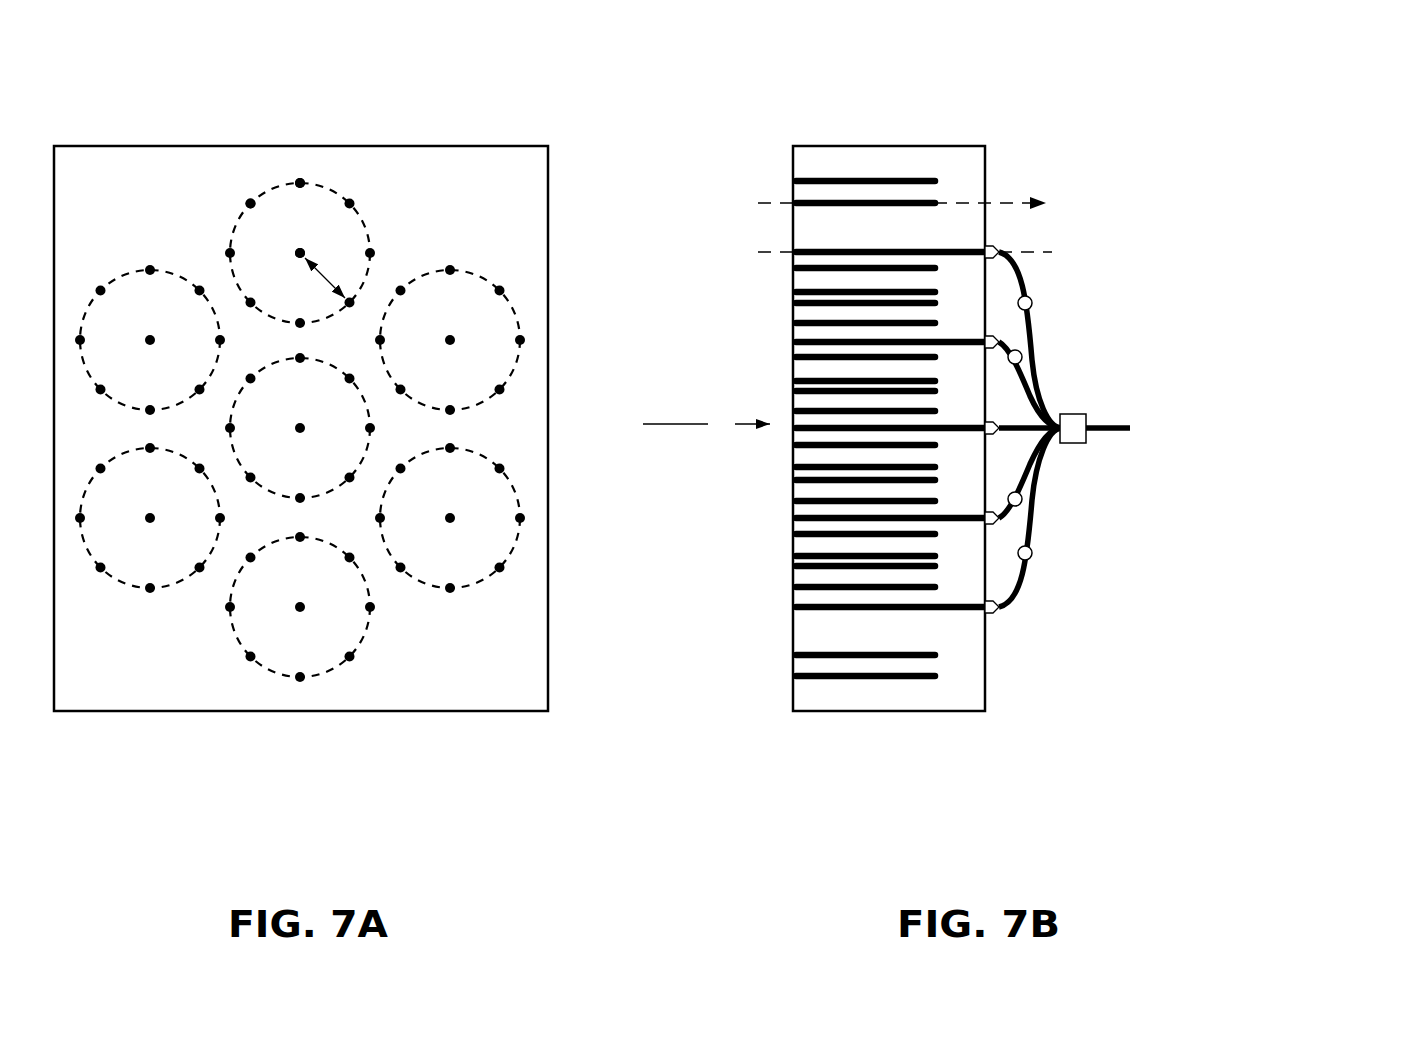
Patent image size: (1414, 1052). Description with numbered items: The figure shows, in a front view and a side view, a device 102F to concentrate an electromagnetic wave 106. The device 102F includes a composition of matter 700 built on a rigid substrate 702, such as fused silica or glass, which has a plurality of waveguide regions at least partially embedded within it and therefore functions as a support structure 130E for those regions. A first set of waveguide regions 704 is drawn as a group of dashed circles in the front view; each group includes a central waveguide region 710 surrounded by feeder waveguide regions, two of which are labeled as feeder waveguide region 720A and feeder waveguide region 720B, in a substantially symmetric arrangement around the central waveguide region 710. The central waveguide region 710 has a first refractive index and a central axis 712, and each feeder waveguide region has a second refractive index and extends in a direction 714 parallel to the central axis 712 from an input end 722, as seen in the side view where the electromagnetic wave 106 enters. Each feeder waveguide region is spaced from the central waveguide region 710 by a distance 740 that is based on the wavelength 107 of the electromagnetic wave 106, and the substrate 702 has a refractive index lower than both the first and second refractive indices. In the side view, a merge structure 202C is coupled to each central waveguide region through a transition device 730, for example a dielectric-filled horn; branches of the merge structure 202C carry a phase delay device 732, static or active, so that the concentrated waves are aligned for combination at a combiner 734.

In FIG. 7A, the composition of matter 700 is at (386, 413).
In FIG. 7B, the composition of matter 700 is at (987, 423).
In FIG. 7A, the device 102F is at (386, 413).
In FIG. 7A, the substrate 702 is at (148, 676).
In FIG. 7B, the substrate 702 is at (985, 676).
In FIG. 7A, the support structure 130E is at (350, 711).
In FIG. 7B, the support structure 130E is at (943, 711).
In FIG. 7A, the waveguide regions 704 is at (390, 203).
In FIG. 7A, the central waveguide region 710 is at (300, 253).
In FIG. 7B, the central waveguide region 710 is at (990, 247).
In FIG. 7A, the feeder waveguide region 720A is at (300, 183).
In FIG. 7B, the feeder waveguide region 720A is at (832, 181).
In FIG. 7A, the feeder waveguide region 720B is at (250, 204).
In FIG. 7B, the feeder waveguide region 720B is at (930, 203).
In FIG. 7A, the distance 740 is at (332, 280).
In FIG. 7B, the direction 714 is at (993, 205).
In FIG. 7B, the input end 722 is at (786, 211).
In FIG. 7B, the central axis 712 is at (1046, 256).
In FIG. 7B, the transition device 730 is at (1000, 250).
In FIG. 7B, the phase delay device 732 is at (1032, 308).
In FIG. 7B, the combiner 734 is at (1076, 414).
In FIG. 7B, the merge structure 202C is at (1045, 538).
In FIG. 7B, the wavelength 107 is at (660, 382).
In FIG. 7B, the electromagnetic wave 106 is at (667, 435).